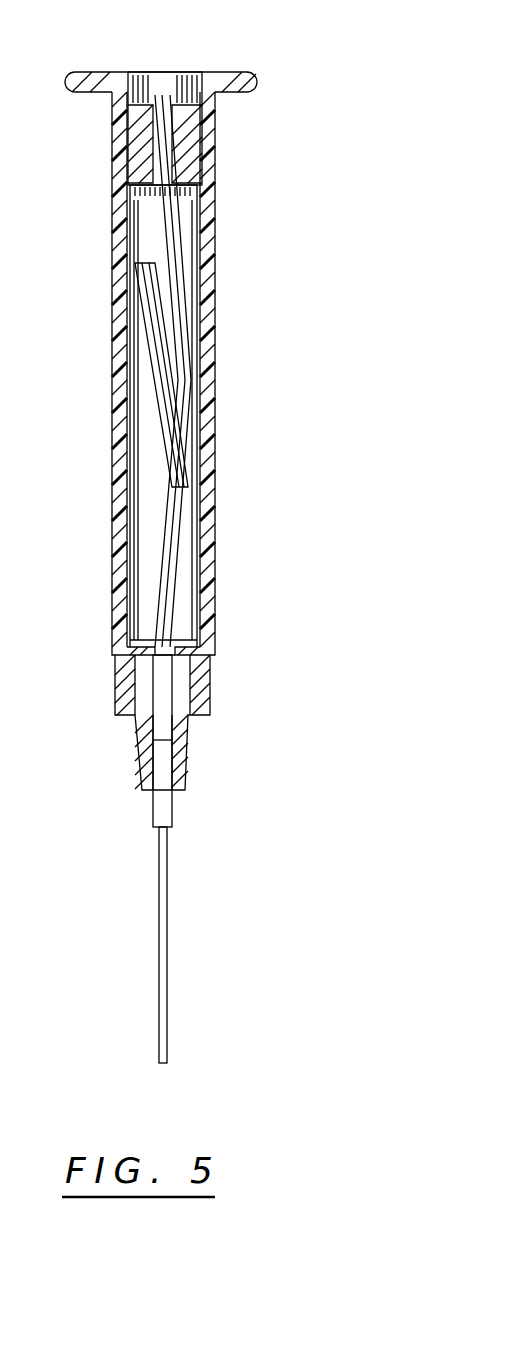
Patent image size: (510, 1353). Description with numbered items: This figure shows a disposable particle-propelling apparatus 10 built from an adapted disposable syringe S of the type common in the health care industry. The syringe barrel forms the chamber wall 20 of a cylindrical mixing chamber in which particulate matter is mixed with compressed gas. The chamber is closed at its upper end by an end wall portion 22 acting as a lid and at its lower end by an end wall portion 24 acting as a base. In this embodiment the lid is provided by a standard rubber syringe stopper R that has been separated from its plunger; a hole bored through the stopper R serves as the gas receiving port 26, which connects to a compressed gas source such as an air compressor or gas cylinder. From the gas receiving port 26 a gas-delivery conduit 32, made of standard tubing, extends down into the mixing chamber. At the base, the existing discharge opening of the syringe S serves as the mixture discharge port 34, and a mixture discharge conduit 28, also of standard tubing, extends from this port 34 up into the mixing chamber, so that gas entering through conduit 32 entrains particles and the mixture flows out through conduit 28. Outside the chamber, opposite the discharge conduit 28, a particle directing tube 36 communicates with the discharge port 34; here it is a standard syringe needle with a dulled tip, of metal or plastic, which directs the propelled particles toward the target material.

The disposable particle-propelling apparatus 10 is at (252, 188).
The disposable syringe S is at (232, 396).
The chamber wall 20 is at (213, 248).
The end wall portion (lid) 22 is at (142, 95).
The rubber syringe stopper R is at (133, 156).
The end wall portion (base) 24 is at (143, 650).
The gas receiving port 26 is at (160, 110).
The mixture discharge conduit 28 is at (150, 370).
The gas-delivery conduit 32 is at (178, 288).
The mixture discharge port 34 is at (176, 647).
The particle directing tube (needle) 36 is at (168, 945).